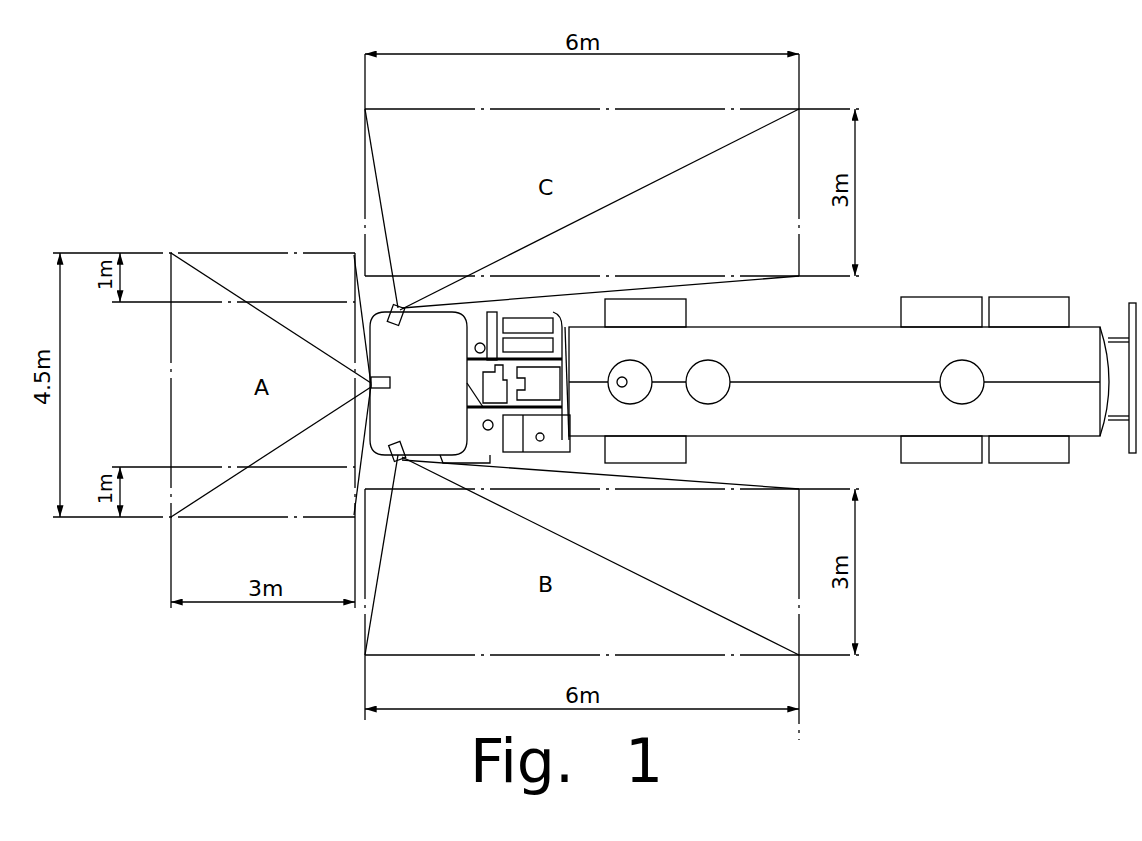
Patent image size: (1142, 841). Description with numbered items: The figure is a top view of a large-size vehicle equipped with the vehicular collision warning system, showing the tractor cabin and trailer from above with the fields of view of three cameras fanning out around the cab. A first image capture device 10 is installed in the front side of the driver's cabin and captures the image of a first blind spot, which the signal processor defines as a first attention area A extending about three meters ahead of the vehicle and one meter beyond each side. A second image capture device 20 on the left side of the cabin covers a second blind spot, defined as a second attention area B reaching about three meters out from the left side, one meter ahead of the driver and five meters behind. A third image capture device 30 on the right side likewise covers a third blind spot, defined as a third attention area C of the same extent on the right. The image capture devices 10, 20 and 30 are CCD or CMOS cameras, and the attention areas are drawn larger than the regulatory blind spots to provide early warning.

The first image capture device 10 is at (369, 380).
The second image capture device 20 is at (395, 457).
The third image capture device 30 is at (395, 303).